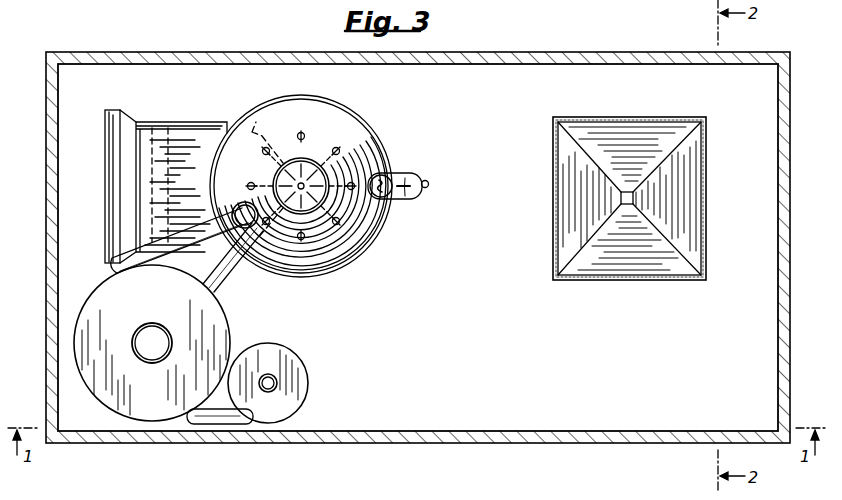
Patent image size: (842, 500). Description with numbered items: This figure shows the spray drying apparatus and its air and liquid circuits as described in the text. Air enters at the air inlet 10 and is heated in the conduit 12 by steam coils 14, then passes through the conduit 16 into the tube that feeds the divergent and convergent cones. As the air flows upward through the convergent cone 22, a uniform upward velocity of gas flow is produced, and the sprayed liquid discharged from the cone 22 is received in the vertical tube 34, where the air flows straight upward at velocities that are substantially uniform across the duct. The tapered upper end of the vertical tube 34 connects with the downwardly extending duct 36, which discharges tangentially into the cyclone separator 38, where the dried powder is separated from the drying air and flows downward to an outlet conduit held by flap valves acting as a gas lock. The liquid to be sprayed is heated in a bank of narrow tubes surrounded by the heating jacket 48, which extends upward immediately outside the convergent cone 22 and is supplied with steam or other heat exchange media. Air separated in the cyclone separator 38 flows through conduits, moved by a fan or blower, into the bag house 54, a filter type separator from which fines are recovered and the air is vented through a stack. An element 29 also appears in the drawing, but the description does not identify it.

The air inlet 10 is at (114, 112).
The conduit 12 is at (192, 122).
The steam coils 14 is at (152, 128).
The conduit 16 is at (256, 122).
The convergent cone 22 is at (380, 138).
The fastener studs 29 is at (305, 238).
The vertical tube 34 is at (332, 195).
The downwardly extending duct 36 is at (240, 203).
The cyclone separator 38 is at (160, 304).
The heating jacket 48 is at (405, 173).
The bag house 54 is at (685, 202).